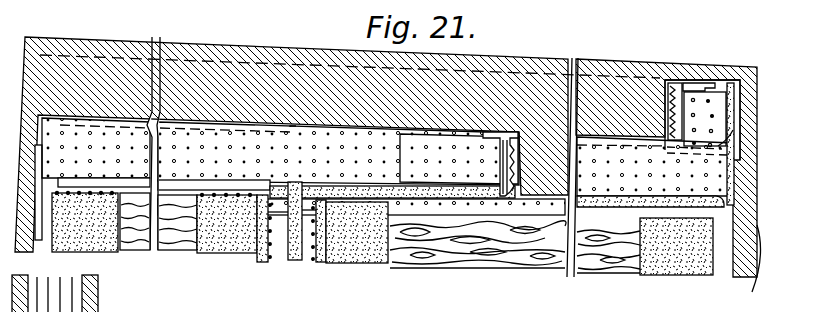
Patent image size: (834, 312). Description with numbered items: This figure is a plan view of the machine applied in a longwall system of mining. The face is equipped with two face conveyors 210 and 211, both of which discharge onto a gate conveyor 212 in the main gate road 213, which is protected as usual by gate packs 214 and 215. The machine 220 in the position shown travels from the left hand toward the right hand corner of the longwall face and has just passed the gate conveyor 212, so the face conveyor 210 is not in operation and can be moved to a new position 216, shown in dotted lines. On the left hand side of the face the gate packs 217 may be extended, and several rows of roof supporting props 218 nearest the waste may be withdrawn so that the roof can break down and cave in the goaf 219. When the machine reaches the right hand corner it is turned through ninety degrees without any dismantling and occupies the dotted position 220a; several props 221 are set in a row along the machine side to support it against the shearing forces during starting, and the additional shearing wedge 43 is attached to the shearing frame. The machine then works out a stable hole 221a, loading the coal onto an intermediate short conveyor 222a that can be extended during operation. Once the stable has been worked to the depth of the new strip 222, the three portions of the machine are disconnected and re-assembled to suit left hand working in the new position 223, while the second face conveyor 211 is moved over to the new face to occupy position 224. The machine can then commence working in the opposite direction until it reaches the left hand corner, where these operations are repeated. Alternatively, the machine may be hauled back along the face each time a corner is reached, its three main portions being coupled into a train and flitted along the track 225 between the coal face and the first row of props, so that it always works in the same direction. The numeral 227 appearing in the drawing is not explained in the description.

The additional shearing wedge 43 is at (733, 128).
The face conveyor 210 is at (95, 183).
The second face conveyor 211 is at (334, 191).
The gate conveyor 212 is at (291, 262).
The main gate road 213 is at (280, 247).
The gate pack 214 is at (213, 252).
The gate pack 215 is at (348, 248).
The new position of face conveyor 216 is at (166, 121).
The gate packs 217 is at (82, 245).
The roof supporting props 218 is at (326, 152).
The goaf 219 is at (163, 250).
The machine 220 is at (502, 133).
The turned position of machine 220a is at (672, 156).
The props 221 is at (658, 145).
The stable hole 221a is at (700, 113).
The new strip 222 is at (590, 105).
The intermediate short conveyor 222a is at (741, 267).
The new position of machine 223 is at (698, 83).
The new position of second face conveyor 224 is at (591, 152).
The track 225 is at (433, 135).
The insulation fill 227 is at (659, 265).